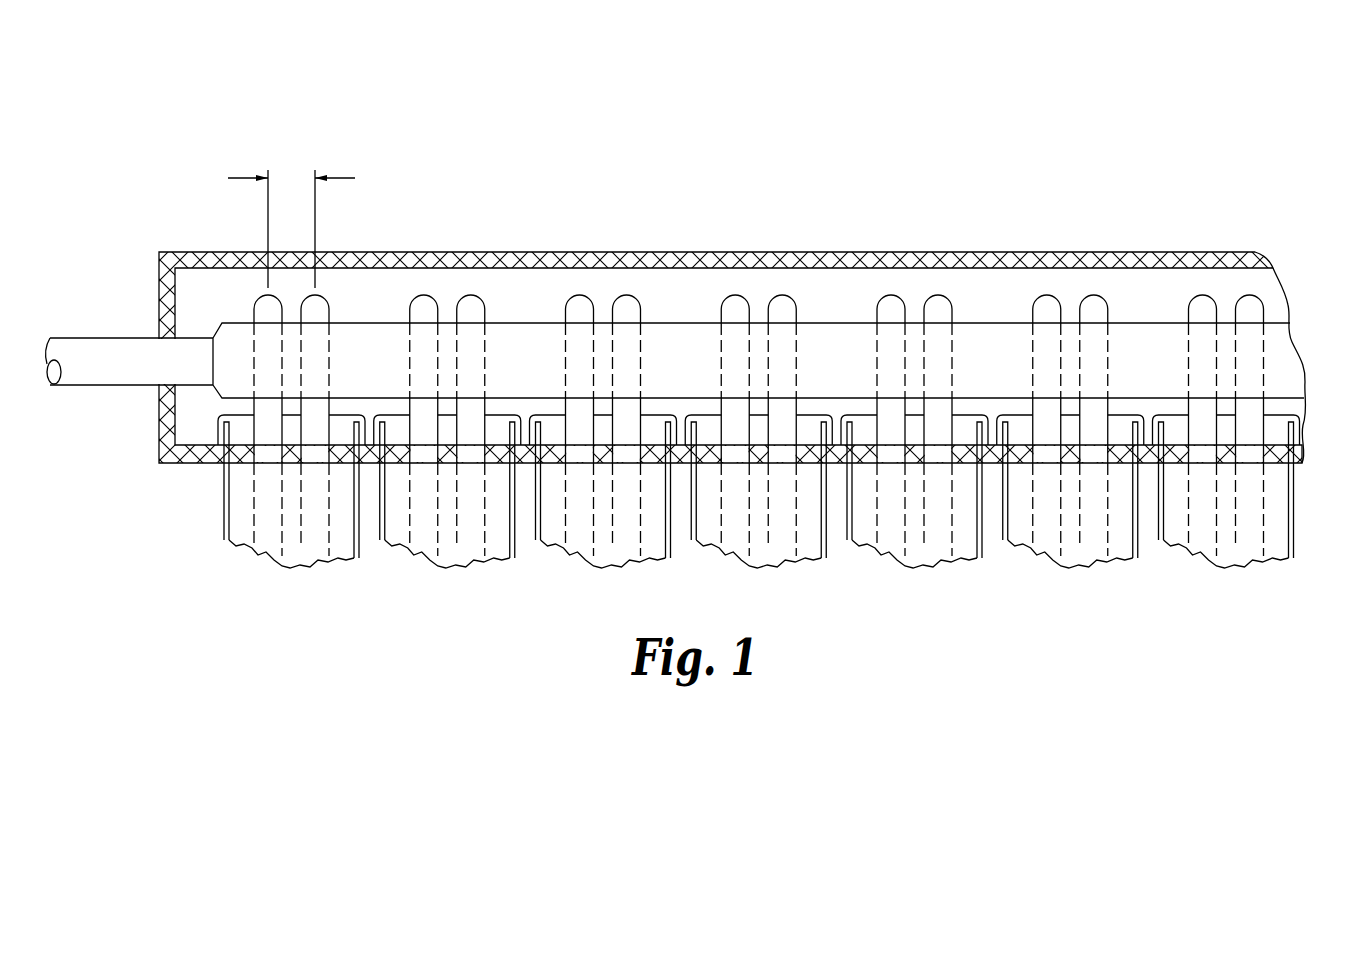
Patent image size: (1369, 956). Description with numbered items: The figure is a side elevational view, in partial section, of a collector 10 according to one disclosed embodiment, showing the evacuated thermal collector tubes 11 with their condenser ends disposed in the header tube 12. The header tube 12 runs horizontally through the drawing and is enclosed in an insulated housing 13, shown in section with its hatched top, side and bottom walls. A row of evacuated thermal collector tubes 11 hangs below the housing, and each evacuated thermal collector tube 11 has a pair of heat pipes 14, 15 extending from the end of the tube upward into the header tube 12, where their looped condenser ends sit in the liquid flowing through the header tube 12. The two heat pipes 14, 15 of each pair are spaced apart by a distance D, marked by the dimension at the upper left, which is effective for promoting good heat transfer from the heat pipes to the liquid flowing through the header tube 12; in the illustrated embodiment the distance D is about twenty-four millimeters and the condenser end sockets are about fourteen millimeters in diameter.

The collector 10 is at (1177, 196).
The evacuated thermal collector tube 11 is at (1310, 533).
The header tube 12 is at (225, 337).
The insulated housing 13 is at (568, 260).
The heat pipe 14 is at (890, 520).
The heat pipe 15 is at (938, 547).
The distance D is at (303, 178).